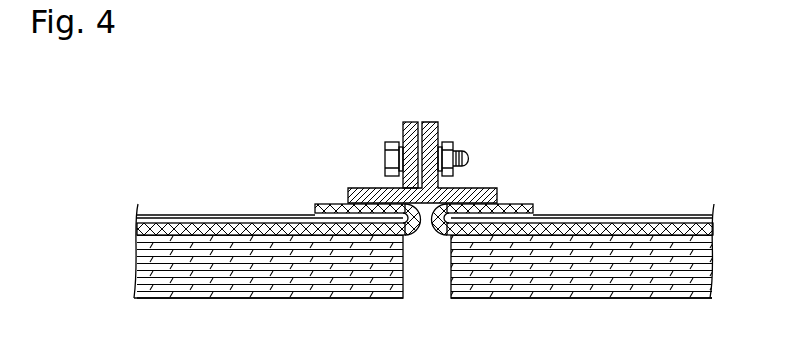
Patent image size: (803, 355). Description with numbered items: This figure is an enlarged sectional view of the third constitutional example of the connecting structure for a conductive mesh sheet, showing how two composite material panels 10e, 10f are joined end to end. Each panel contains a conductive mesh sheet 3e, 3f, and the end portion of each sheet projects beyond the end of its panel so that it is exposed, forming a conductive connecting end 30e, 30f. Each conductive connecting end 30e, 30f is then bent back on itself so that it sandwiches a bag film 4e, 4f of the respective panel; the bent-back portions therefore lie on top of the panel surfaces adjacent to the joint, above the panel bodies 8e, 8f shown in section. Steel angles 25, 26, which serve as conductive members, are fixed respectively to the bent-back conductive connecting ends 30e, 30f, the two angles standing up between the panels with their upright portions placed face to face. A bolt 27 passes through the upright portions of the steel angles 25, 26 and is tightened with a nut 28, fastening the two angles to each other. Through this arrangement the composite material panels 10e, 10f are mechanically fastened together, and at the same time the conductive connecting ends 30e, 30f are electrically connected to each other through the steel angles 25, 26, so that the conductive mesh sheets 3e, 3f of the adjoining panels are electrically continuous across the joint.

The composite material panel 10e is at (180, 196).
The composite material panel 10f is at (681, 178).
The bag film 4e is at (218, 217).
The bag film 4f is at (623, 218).
The conductive mesh sheet 3e is at (250, 221).
The conductive mesh sheet 3f is at (592, 227).
The core of first panel 8e is at (267, 278).
The core of second panel 8f is at (585, 282).
The conductive connecting end 30e is at (315, 206).
The conductive connecting end 30f is at (522, 204).
The steel angle 25 is at (410, 122).
The steel angle 26 is at (432, 122).
The bolt 27 is at (385, 152).
The nut 28 is at (453, 142).